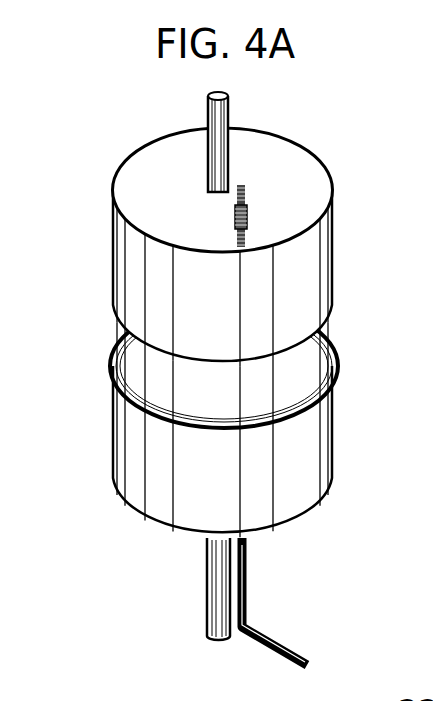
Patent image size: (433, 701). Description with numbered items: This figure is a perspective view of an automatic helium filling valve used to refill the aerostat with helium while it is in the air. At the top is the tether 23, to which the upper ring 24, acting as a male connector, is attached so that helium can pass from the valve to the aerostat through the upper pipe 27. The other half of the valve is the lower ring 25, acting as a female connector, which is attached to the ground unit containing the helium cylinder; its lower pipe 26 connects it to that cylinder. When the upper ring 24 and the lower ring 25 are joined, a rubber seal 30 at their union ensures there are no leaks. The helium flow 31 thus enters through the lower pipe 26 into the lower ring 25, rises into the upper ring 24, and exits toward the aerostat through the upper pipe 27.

The Tether 23 is at (207, 117).
The Upper-Ring 24 is at (290, 275).
The Lower-Ring 25 is at (308, 445).
The lower pipe 26 is at (245, 607).
The Upper-Pipe 27 is at (237, 238).
The Rubber-Seal 30 is at (112, 357).
The Helium-Flow 31 is at (247, 213).